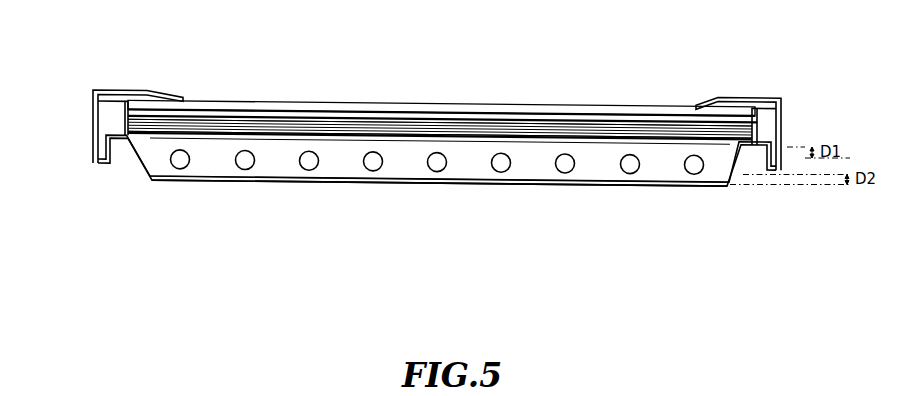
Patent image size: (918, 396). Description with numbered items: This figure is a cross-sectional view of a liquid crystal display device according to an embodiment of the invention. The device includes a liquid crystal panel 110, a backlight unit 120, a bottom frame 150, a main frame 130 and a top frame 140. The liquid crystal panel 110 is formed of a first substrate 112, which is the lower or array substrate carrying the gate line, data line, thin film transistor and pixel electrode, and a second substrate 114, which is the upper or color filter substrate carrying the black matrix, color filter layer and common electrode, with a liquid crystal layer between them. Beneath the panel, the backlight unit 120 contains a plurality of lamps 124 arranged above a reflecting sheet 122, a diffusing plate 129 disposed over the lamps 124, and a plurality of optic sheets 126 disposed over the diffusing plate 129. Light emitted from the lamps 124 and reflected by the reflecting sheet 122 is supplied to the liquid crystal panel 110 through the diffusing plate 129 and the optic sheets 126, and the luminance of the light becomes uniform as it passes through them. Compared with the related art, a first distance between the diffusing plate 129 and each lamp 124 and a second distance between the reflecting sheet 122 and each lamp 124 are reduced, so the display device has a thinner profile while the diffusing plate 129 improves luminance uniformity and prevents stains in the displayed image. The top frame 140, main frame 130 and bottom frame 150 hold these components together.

The liquid crystal panel 110 is at (442, 74).
The first substrate 112 is at (392, 118).
The second substrate 114 is at (330, 103).
The backlight unit 120 is at (440, 223).
The reflecting sheet 122 is at (482, 187).
The lamps 124 is at (437, 187).
The optic sheets 126 is at (527, 137).
The diffusing plate 129 is at (582, 142).
The main frame 130 is at (100, 133).
The top frame 140 is at (167, 87).
The bottom frame 150 is at (200, 187).